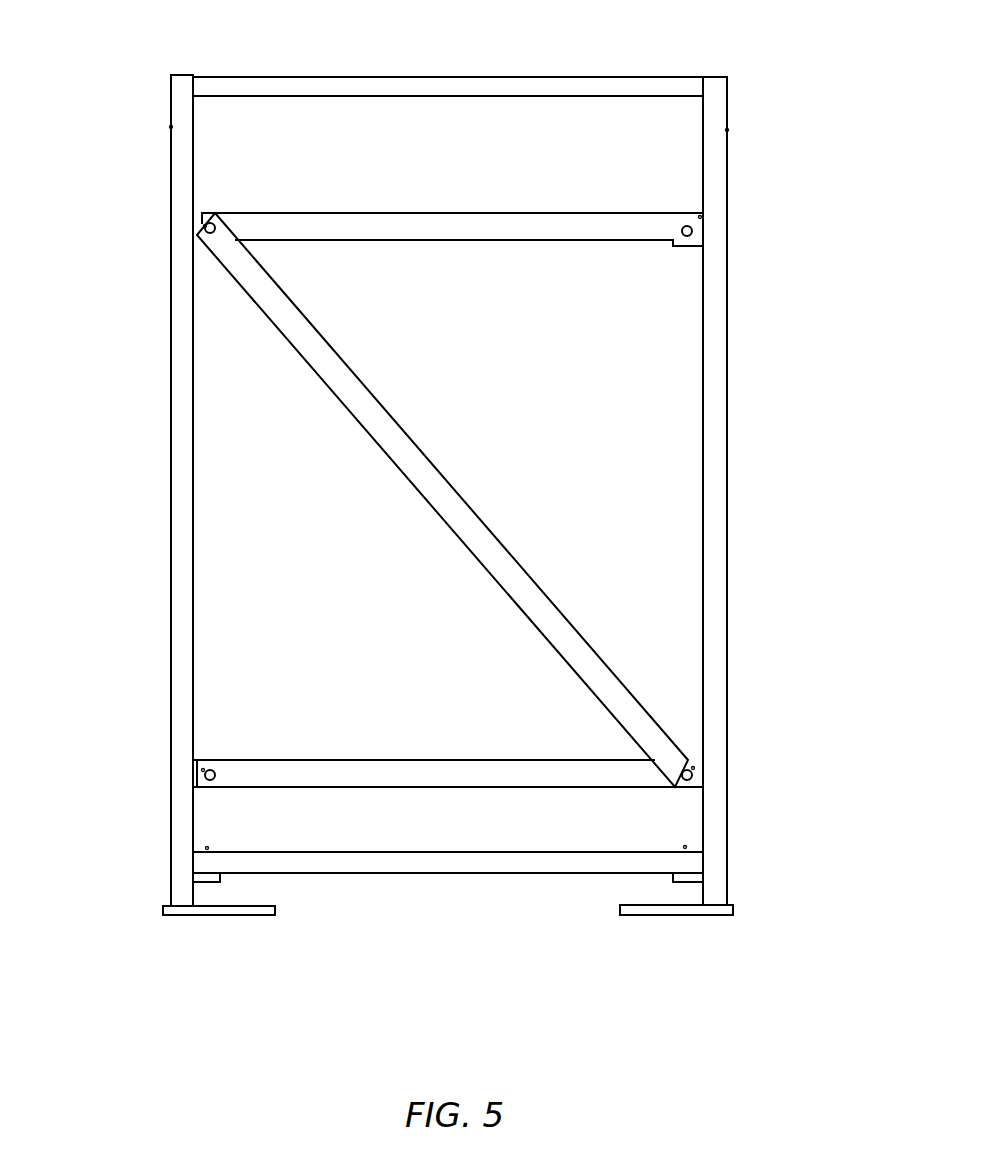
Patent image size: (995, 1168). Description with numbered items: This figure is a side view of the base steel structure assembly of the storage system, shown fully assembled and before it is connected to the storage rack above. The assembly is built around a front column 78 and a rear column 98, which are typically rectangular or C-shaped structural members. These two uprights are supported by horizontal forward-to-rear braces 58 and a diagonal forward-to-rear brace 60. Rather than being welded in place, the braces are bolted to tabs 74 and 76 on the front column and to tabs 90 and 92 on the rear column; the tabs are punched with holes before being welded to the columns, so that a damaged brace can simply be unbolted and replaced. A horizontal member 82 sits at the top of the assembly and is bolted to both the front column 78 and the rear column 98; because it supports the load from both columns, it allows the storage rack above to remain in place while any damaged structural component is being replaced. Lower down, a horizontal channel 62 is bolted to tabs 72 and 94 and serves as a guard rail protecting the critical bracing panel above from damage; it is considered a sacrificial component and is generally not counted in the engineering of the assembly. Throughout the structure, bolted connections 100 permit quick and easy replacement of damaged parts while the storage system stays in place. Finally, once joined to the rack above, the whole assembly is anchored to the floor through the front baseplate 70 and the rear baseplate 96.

The horizontal forward-to-rear brace 58 is at (448, 463).
The diagonal forward-to-rear brace 60 is at (442, 500).
The horizontal channel 62 is at (448, 836).
The front baseplate 70 is at (188, 948).
The tab 72 is at (264, 920).
The tab 74 is at (248, 803).
The tab 76 is at (246, 307).
The front column 78 is at (126, 476).
The horizontal member 82 is at (448, 50).
The tab 90 is at (647, 272).
The tab 92 is at (654, 803).
The tab 94 is at (637, 919).
The rear baseplate 96 is at (699, 948).
The rear column 98 is at (780, 491).
The bolted connection 100 is at (783, 180).